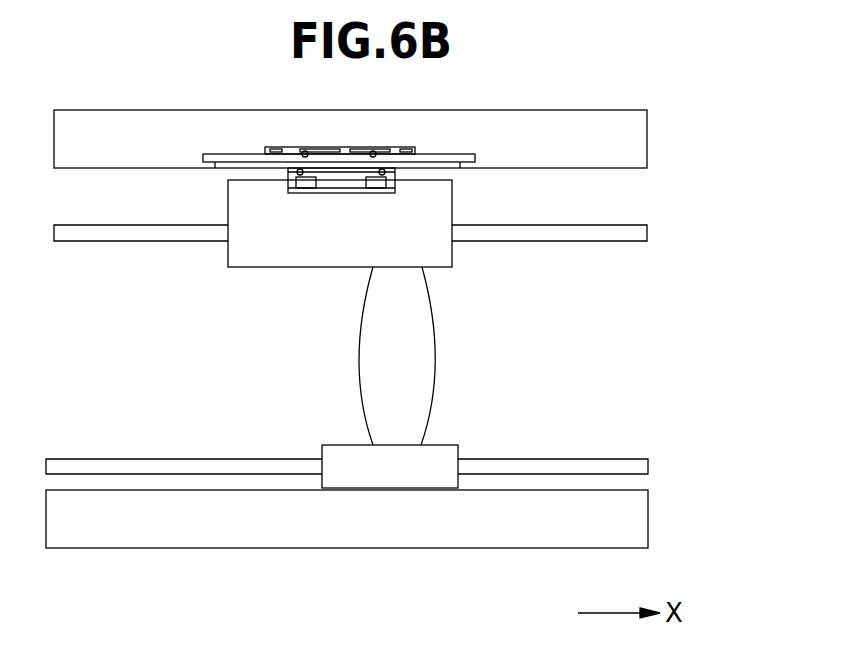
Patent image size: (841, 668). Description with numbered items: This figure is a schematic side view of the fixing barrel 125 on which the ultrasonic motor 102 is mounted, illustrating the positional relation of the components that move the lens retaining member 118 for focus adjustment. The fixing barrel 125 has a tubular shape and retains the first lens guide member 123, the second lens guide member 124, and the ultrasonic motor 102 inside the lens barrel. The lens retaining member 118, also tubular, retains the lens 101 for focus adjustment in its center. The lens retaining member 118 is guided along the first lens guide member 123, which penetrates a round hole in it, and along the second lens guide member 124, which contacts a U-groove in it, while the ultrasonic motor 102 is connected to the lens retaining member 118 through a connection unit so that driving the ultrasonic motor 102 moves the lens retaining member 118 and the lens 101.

The fixing barrel 125 is at (638, 137).
The ultrasonic motor 102 is at (475, 157).
The first lens guide member 123 is at (638, 231).
The lens retaining member 118 is at (445, 252).
The lens 101 is at (425, 373).
The second lens guide member 124 is at (637, 465).